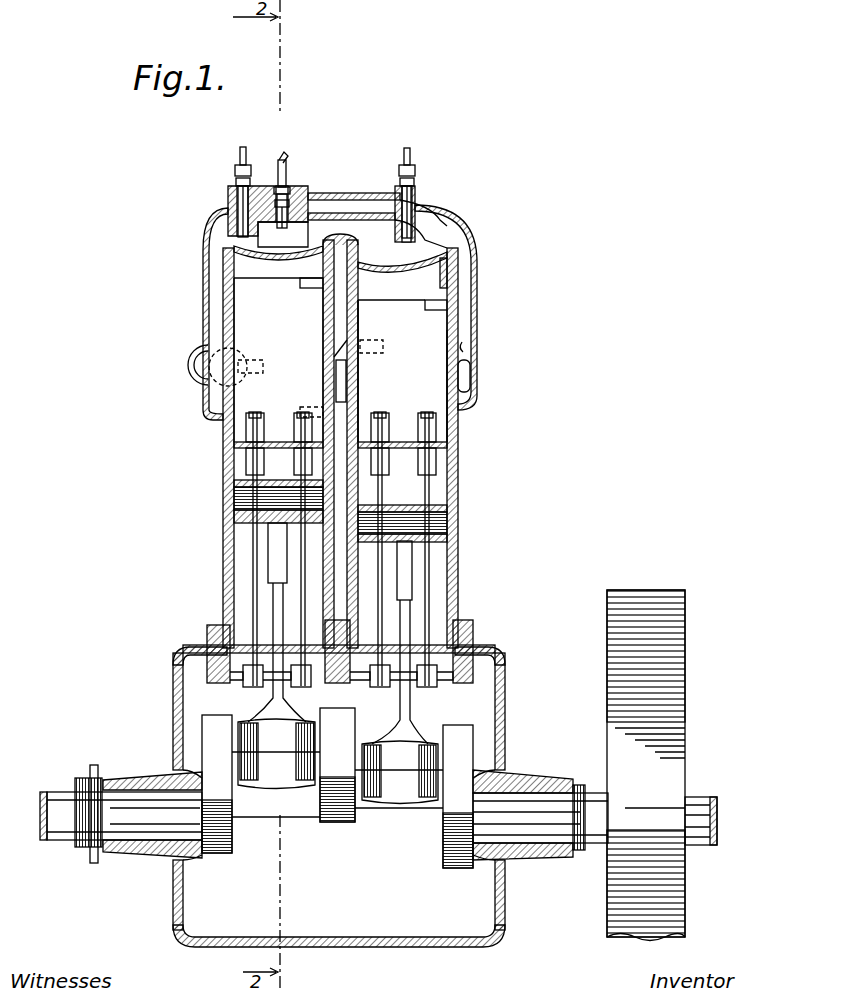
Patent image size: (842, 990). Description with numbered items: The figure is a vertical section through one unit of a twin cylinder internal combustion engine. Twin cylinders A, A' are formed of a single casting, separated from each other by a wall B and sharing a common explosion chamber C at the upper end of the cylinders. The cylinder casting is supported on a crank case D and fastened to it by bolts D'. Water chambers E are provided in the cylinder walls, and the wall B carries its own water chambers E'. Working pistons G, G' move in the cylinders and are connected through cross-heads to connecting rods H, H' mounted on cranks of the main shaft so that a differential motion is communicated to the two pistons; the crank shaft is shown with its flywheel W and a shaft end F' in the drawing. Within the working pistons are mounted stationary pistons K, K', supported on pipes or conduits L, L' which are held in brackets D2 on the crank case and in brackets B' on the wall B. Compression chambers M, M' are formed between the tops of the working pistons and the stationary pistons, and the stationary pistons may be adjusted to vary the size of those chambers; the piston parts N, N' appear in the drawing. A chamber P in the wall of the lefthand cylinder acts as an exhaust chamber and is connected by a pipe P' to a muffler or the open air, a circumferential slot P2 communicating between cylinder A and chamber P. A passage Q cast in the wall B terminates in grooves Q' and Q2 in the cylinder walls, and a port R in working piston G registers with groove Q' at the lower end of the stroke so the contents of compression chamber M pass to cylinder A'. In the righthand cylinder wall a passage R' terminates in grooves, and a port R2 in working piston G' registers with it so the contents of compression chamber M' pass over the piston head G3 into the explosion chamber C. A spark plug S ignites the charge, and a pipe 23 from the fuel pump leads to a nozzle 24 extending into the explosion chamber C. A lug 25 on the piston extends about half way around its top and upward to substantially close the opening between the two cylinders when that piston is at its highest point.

The pipe 23 is at (243, 162).
The spark plug S is at (282, 186).
The lug or projection 25 is at (302, 233).
The nozzle 24 is at (232, 228).
The explosion chamber C is at (430, 228).
The water chambers E is at (337, 312).
The working piston G is at (278, 277).
The port or opening R is at (303, 293).
The head of working piston G3 is at (445, 258).
The port or opening R2 is at (440, 306).
The cylinder A is at (196, 448).
The cylinder A' is at (486, 448).
The wall B is at (349, 435).
The compression chamber M is at (278, 360).
The compression chamber M' is at (402, 371).
The groove Q2 is at (374, 350).
The passage Q is at (322, 381).
The groove Q' is at (291, 399).
The water chambers E' is at (402, 371).
The working piston G' is at (510, 354).
The passage R' is at (490, 380).
The exhaust chamber P is at (178, 364).
The pipe P' is at (196, 385).
The circumferential slot P2 is at (257, 373).
The stationary piston K is at (263, 461).
The stationary piston K' is at (425, 452).
The piston ring N is at (263, 520).
The second piston N' is at (422, 523).
The pipes or conduits L is at (248, 549).
The pipes or conduits L' is at (449, 549).
The connecting rod H is at (251, 656).
The connecting rod H' is at (445, 672).
The crank shaft F' is at (378, 788).
The crank case D is at (338, 796).
The bolts D' is at (323, 637).
The brackets D2 is at (522, 677).
The brackets B' is at (341, 685).
The flywheel W is at (646, 765).